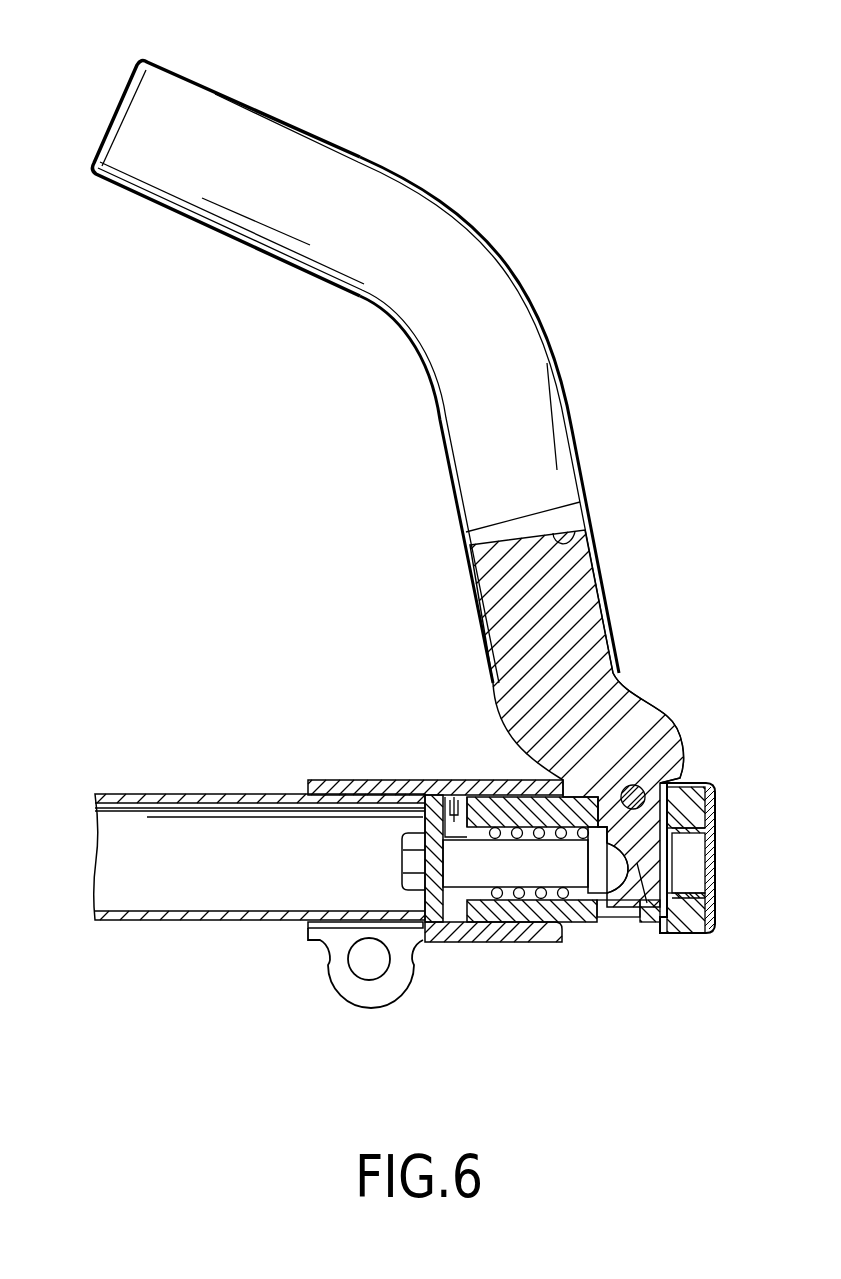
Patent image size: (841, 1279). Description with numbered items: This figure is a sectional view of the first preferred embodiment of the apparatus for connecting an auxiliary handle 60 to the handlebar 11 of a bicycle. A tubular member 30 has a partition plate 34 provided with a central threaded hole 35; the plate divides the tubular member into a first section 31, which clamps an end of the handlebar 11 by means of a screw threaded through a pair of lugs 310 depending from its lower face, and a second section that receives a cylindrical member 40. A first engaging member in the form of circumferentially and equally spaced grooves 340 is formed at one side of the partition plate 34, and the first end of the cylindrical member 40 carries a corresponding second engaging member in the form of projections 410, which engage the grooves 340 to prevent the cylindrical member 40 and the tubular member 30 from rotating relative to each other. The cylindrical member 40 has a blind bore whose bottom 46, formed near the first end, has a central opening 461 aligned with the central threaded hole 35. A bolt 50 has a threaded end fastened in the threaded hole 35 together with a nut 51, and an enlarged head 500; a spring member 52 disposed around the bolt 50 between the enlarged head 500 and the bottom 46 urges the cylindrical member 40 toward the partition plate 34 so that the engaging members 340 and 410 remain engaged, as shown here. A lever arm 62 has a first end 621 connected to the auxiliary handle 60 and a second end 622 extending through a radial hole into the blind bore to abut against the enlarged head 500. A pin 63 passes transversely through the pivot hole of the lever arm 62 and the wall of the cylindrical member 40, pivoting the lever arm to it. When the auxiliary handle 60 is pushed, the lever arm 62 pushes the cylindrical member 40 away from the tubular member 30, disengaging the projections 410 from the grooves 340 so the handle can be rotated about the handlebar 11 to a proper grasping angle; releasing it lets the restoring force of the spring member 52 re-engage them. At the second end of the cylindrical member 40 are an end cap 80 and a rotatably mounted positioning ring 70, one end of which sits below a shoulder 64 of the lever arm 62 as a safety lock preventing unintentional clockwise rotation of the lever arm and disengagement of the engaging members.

The handlebar 11 is at (172, 920).
The tubular member 30 is at (465, 942).
The first section 31 is at (320, 940).
The lugs 310 is at (367, 993).
The partition plate 34 is at (420, 800).
The central threaded hole 35 is at (437, 942).
The cylindrical member 40 is at (600, 917).
The projections 410 is at (452, 800).
The grooves 340 is at (462, 797).
The bottom of the blind bore 46 is at (495, 887).
The central opening 461 is at (492, 780).
The bolt 50 is at (508, 870).
The enlarged head 500 is at (625, 920).
The nut 51 is at (400, 840).
The spring member 52 is at (590, 893).
The auxiliary handle 60 is at (583, 480).
The lever arm 62 is at (633, 707).
The first end of the lever arm 621 is at (587, 533).
The second end of the lever arm 622 is at (644, 903).
The pin 63 is at (640, 740).
The shoulder 64 is at (680, 777).
The positioning ring 70 is at (690, 783).
The end cap 80 is at (713, 845).